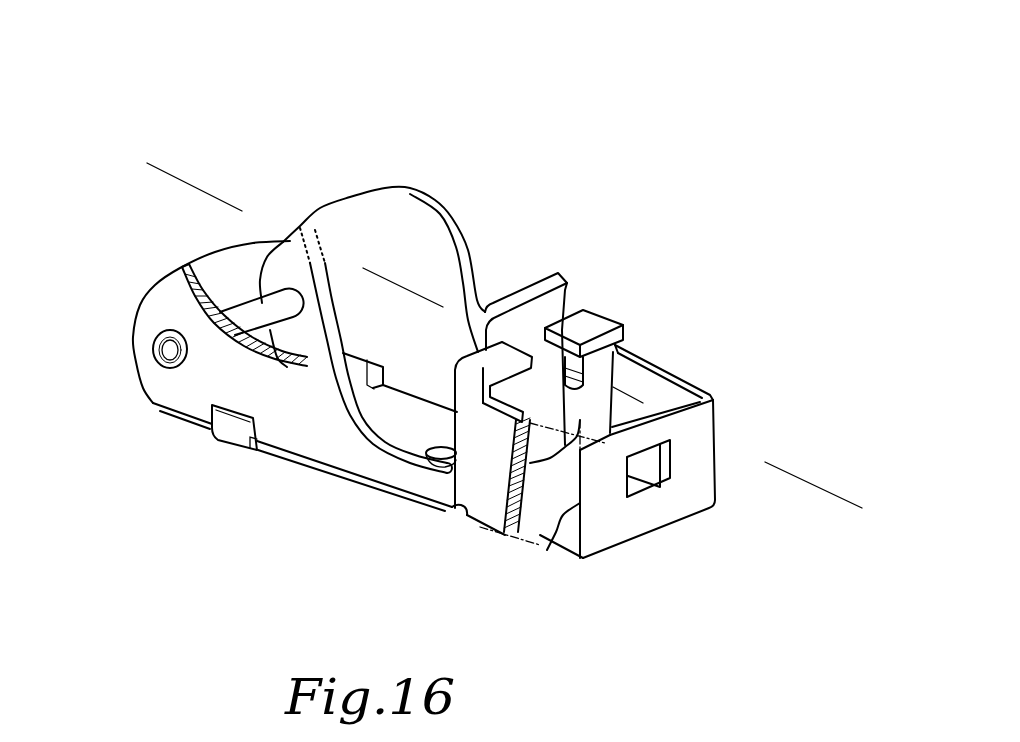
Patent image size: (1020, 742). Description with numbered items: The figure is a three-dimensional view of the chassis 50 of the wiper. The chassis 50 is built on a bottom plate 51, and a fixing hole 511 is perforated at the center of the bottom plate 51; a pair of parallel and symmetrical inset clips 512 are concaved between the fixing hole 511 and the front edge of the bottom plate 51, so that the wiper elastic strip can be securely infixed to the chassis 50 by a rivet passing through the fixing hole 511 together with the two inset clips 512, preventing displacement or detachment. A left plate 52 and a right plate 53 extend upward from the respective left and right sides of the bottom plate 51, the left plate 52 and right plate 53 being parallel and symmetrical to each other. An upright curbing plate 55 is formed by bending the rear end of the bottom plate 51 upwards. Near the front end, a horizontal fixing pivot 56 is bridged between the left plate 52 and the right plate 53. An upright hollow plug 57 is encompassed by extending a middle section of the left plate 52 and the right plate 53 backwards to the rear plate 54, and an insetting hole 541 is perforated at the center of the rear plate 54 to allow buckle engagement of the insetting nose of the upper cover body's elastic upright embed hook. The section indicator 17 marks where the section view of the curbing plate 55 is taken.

The chassis 50 is at (507, 140).
The bottom plate 51 is at (412, 427).
The fixing hole 511 is at (437, 472).
The inset clips 512 is at (233, 443).
The left plate 52 is at (173, 390).
The right plate 53 is at (376, 212).
The rear plate 54 is at (630, 523).
The insetting hole 541 is at (650, 470).
The upright curbing plate 55 is at (536, 292).
The horizontal fixing pivot 56 is at (245, 320).
The upright hollow plug 57 is at (617, 388).
The section line 17- 17 is at (147, 163).